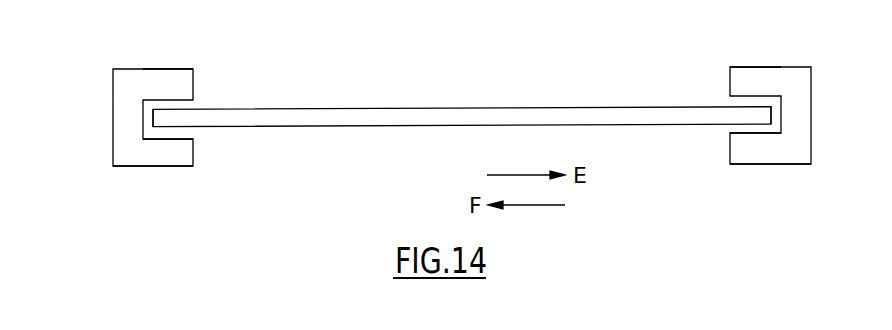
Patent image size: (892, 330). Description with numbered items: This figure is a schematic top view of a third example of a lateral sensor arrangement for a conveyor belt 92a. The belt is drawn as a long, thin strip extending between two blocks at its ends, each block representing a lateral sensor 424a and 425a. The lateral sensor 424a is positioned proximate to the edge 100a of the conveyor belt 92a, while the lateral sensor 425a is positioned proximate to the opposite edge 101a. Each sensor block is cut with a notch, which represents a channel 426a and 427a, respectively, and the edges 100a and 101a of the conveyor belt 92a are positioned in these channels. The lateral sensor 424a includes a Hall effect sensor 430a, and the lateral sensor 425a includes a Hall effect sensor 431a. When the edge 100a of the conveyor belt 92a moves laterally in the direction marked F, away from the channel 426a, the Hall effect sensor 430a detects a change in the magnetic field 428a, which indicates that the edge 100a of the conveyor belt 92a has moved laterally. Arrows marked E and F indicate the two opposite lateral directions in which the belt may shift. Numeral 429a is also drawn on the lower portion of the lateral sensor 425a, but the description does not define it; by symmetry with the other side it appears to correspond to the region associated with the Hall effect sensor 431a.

The conveyor belt 92a is at (293, 109).
The edge 100a is at (771, 113).
The edge 101a is at (153, 120).
The lateral sensor 424a is at (778, 67).
The lateral sensor 425a is at (137, 68).
The channel 426a is at (743, 128).
The channel 427a is at (183, 130).
The magnetic field 428a is at (763, 153).
The lower arm 429a is at (177, 152).
The Hall effect sensor 430a is at (752, 82).
The Hall effect sensor 431a is at (167, 85).